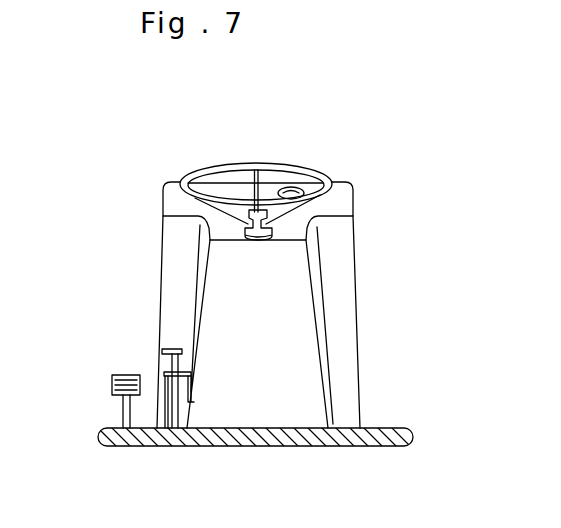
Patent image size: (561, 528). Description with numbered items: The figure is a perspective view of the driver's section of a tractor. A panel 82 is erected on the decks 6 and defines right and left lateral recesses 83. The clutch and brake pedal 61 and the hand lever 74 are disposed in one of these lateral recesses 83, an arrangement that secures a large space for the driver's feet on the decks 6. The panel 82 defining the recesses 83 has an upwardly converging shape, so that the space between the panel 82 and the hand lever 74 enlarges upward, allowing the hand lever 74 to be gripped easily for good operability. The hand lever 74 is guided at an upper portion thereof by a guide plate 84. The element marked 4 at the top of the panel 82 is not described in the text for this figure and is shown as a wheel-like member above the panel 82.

The hand wheel 4 is at (307, 167).
The panel 82 is at (352, 202).
The lateral recesses 83 is at (190, 243).
The hand lever 74 is at (165, 362).
The guide plate 84 is at (165, 428).
The clutch and brake pedal 61 is at (112, 378).
The decks 6 is at (385, 430).